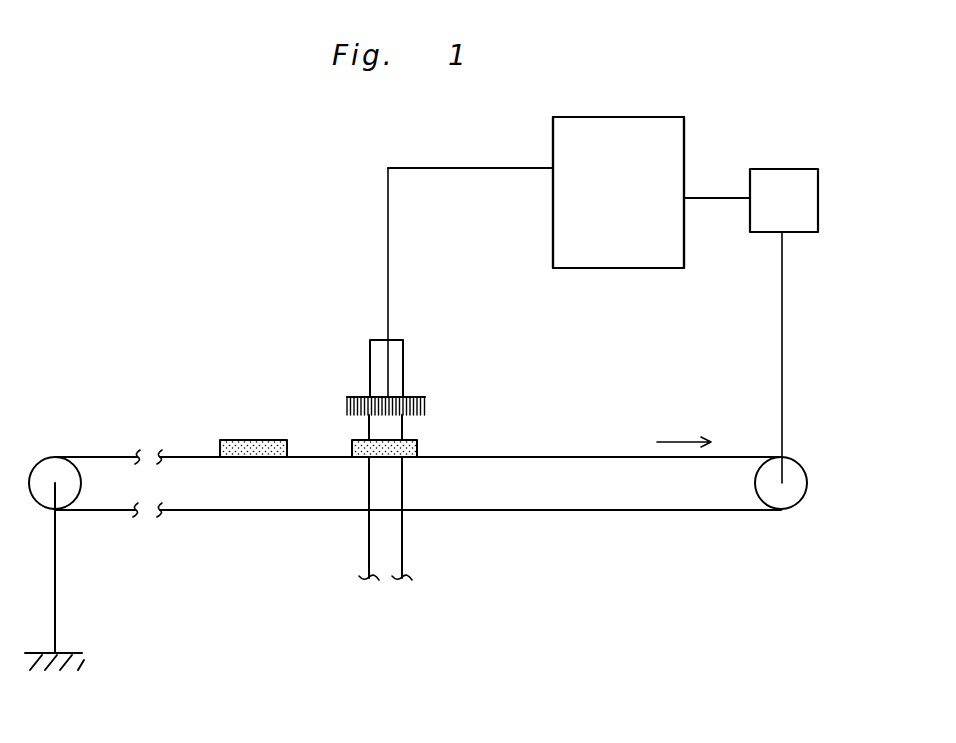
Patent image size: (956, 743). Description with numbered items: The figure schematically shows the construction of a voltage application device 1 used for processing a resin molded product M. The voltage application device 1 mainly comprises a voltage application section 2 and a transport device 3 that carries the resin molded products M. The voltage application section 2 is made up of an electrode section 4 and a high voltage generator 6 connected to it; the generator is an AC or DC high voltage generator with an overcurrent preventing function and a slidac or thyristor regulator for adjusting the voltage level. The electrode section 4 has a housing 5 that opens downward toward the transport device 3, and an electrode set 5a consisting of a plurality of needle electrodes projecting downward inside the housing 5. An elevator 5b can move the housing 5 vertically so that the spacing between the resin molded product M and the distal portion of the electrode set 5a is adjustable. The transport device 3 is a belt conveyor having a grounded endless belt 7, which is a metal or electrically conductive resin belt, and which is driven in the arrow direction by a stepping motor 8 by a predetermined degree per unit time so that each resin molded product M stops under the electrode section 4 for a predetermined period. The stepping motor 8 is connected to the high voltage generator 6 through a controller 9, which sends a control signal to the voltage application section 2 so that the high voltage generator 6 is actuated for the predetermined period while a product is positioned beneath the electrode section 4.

The voltage application device 1 is at (370, 374).
The voltage application section 2 is at (607, 106).
The transport device 3 is at (403, 553).
The electrode section 4 is at (416, 383).
The housing 5 is at (398, 427).
The electrode set 5a is at (357, 418).
The elevator 5b is at (399, 352).
The high voltage generator 6 is at (668, 145).
The endless belt 7 is at (215, 511).
The stepping motor 8 is at (785, 500).
The controller 9 is at (808, 187).
The resin molded product M is at (237, 440).